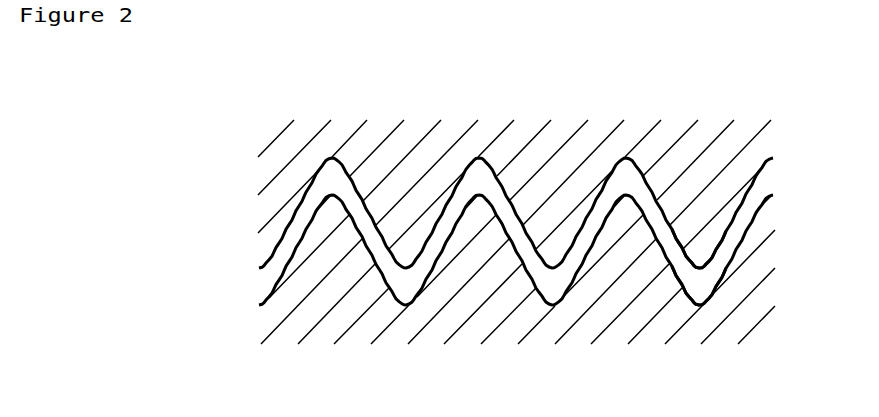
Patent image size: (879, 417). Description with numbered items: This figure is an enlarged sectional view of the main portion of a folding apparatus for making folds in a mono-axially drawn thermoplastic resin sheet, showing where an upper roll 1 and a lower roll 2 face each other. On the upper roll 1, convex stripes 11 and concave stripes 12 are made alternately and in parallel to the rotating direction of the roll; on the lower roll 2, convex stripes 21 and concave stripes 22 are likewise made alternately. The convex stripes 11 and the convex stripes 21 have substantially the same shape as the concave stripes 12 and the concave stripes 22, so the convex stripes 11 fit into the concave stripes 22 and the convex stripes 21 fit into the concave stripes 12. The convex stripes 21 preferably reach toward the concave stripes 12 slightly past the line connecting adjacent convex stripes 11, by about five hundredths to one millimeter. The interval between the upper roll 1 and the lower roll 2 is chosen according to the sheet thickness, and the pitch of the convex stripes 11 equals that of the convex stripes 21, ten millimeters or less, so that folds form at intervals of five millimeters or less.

The upper roll 1 is at (502, 122).
The lower roll 2 is at (505, 345).
The convex stripes 11 is at (700, 267).
The concave stripes 12 is at (633, 157).
The convex stripes 21 is at (622, 203).
The concave stripes 22 is at (700, 306).